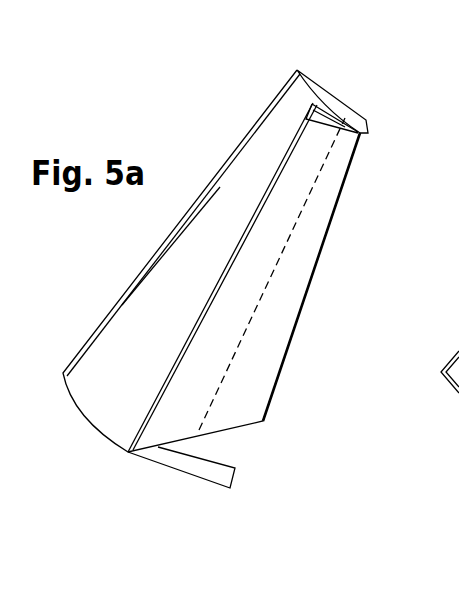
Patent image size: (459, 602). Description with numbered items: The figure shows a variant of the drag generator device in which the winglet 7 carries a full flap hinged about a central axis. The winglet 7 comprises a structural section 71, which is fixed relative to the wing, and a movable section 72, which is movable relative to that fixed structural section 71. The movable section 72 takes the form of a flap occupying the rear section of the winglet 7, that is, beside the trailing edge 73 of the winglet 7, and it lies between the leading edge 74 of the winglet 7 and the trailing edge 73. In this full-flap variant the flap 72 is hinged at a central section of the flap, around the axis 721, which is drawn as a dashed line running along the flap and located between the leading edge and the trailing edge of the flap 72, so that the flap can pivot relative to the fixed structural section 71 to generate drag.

The winglet 7 is at (187, 189).
The structural section 71 is at (164, 291).
The movable section 72 is at (338, 173).
The axis 721 is at (225, 373).
The trailing edge 73 is at (235, 481).
The leading edge 74 is at (265, 108).